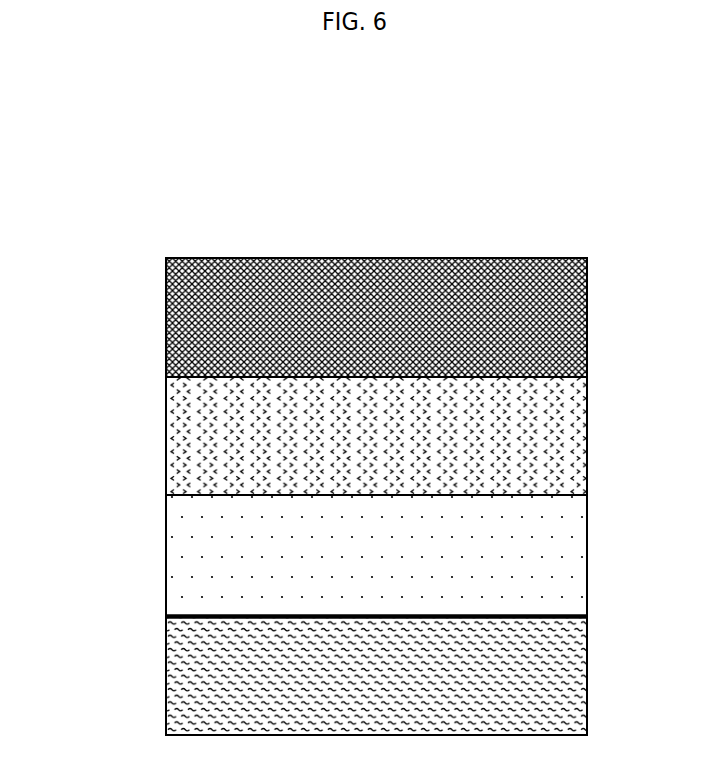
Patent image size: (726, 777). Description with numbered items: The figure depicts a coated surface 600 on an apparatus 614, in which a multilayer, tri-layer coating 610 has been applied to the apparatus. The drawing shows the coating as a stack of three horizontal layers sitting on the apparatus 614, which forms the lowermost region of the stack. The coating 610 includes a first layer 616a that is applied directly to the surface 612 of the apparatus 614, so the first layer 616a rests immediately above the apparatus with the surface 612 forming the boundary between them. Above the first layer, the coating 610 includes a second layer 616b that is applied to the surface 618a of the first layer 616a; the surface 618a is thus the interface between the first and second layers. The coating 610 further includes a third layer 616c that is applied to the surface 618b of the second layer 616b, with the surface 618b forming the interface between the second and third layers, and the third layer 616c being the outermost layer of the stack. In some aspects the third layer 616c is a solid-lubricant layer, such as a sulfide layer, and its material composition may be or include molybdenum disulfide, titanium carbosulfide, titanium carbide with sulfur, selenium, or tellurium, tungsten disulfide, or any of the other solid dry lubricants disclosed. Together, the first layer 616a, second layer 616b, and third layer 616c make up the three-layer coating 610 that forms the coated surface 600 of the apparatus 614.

The coated surface 600 is at (113, 221).
The three-layer coating 610 is at (148, 258).
The third layer 616c is at (588, 318).
The surface of second layer 618b is at (460, 363).
The second layer 616b is at (588, 435).
The surface of first layer 618a is at (534, 483).
The first layer 616a is at (587, 555).
The surface of apparatus 612 is at (548, 614).
The apparatus 614 is at (587, 677).